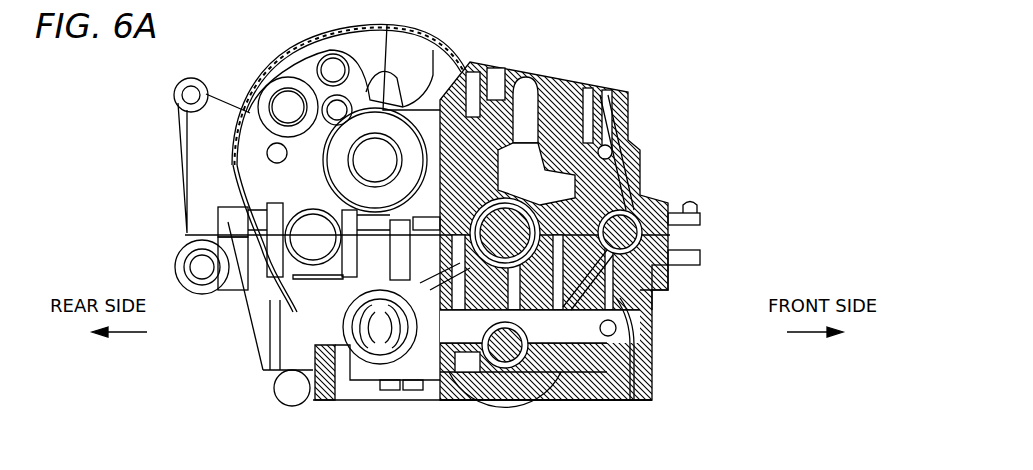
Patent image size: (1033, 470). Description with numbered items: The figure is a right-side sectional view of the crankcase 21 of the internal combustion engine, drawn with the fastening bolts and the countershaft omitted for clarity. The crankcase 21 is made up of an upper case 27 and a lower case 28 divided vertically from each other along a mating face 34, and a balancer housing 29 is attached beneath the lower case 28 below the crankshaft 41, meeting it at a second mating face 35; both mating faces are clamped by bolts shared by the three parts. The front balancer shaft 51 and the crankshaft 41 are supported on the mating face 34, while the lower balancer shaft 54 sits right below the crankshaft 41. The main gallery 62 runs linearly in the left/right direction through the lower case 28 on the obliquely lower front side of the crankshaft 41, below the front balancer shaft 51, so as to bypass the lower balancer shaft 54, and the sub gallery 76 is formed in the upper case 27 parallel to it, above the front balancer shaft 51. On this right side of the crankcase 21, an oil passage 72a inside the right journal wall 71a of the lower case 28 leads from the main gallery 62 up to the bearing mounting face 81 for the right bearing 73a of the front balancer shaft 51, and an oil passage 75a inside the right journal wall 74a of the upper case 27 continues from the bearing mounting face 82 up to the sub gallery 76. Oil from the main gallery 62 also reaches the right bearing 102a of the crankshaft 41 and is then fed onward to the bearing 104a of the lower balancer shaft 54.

The crankcase 21 is at (722, 58).
The crankshaft 41 is at (505, 150).
The mating face 34 is at (557, 160).
The upper case 27 is at (610, 93).
The sub gallery 76 is at (612, 142).
The oil passage 75a is at (633, 157).
The bearing mounting face 82 is at (637, 213).
The front balancer shaft 51 is at (690, 203).
The right journal wall 74a is at (700, 217).
The right journal wall 71a is at (680, 267).
The right bearing 73a is at (660, 290).
The bearing mounting face 81 is at (650, 292).
The oil passage 72a is at (615, 330).
The main gallery 62 is at (627, 347).
The lower case 28 is at (605, 398).
The mating face 35 is at (535, 372).
The balancer housing 29 is at (522, 397).
The bearing 104a is at (492, 372).
The lower balancer shaft 54 is at (468, 372).
The right bearing 102a is at (394, 332).